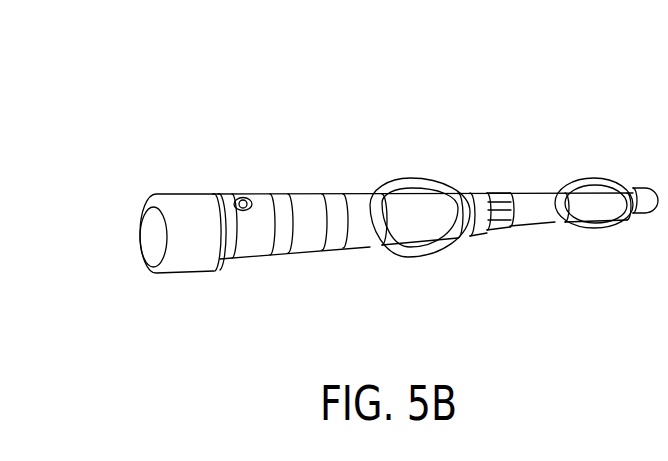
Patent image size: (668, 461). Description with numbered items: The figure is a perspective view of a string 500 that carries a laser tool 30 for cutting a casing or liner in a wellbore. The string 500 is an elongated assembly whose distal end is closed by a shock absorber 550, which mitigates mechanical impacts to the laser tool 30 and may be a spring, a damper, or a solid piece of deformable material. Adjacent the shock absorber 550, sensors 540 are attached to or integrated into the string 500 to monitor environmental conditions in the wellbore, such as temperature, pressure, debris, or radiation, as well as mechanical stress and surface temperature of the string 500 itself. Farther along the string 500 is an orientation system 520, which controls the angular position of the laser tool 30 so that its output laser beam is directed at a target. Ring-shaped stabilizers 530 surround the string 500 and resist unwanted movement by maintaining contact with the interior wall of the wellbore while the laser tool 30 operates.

The string 500 is at (98, 115).
The shock absorber 550 is at (173, 197).
The laser tool 30 is at (244, 254).
The sensors 540 is at (273, 200).
The orientation system 520 is at (495, 231).
The stabilizers 530 is at (599, 230).